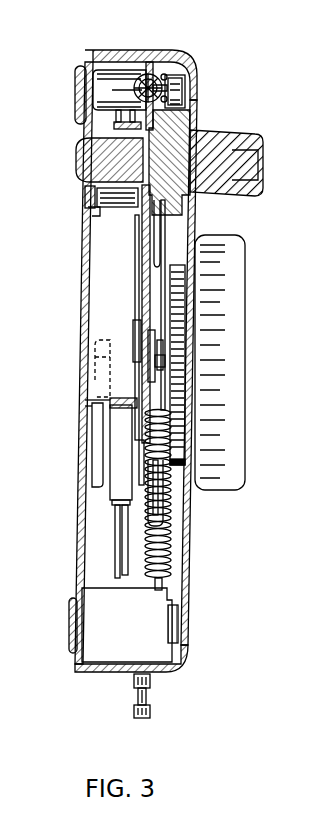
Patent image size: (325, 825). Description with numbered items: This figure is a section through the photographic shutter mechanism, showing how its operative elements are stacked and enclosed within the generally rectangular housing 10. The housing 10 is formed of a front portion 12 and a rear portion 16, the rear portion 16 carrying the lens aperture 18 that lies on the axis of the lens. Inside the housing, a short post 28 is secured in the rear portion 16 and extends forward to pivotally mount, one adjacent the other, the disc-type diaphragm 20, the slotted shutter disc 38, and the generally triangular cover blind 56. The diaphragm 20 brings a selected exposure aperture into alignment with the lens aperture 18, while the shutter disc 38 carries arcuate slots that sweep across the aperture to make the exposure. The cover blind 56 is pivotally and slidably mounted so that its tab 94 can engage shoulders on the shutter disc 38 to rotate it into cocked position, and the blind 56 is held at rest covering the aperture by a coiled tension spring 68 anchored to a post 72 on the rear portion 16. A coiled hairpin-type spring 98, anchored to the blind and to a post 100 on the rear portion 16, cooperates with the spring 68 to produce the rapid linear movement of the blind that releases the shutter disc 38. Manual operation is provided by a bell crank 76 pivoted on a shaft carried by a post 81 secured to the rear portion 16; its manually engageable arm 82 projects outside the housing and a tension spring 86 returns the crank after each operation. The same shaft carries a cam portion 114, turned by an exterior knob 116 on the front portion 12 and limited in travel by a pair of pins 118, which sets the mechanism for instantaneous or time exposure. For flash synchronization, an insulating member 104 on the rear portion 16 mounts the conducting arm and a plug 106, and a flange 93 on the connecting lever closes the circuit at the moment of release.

The housing 10 is at (92, 674).
The front portion 12 is at (188, 590).
The rear portion 16 is at (82, 518).
The lens aperture 18 is at (95, 357).
The diaphragm 20 is at (104, 531).
The post 28 is at (160, 353).
The shutter disc 38 is at (116, 557).
The cover blind 56 is at (133, 453).
The coiled tension spring 68 is at (172, 555).
The post 72 is at (173, 623).
The bell crank 76 is at (138, 243).
The post 81 is at (88, 162).
The manually engageable arm 82 is at (165, 93).
The tension spring 86 is at (135, 82).
The flange 93 is at (165, 513).
The tab 94 is at (140, 333).
The hairpin-type spring 98 is at (172, 100).
The post 100 is at (98, 89).
The insulating member 104 is at (97, 633).
The plug 106 is at (150, 710).
The cam portion 114 is at (183, 123).
The knob 116 is at (256, 163).
The pins 118 is at (95, 210).